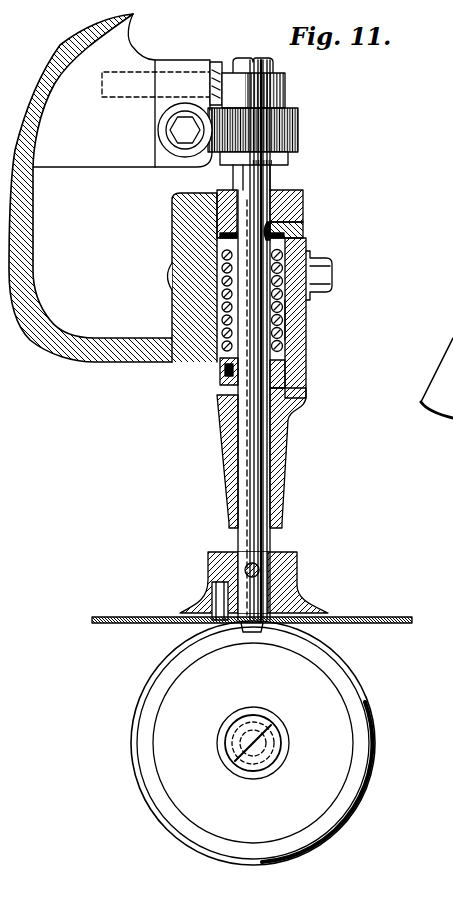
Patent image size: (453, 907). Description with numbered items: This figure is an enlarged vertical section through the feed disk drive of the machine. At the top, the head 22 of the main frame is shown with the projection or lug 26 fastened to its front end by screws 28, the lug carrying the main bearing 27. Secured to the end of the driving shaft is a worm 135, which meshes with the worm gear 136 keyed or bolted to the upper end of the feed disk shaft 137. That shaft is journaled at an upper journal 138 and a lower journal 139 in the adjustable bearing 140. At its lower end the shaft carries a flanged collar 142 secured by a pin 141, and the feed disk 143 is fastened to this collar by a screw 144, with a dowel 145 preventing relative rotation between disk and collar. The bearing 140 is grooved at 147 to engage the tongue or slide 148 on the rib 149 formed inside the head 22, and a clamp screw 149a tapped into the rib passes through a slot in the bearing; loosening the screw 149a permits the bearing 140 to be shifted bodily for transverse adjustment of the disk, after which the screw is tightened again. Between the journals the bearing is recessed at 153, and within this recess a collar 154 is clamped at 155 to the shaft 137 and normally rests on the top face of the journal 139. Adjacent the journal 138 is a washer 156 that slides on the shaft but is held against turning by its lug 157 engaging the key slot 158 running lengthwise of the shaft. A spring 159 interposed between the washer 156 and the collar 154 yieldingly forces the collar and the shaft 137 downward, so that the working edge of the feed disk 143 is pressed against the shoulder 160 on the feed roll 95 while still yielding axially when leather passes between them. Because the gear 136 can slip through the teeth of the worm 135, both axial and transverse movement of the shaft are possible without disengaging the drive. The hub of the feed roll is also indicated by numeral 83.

The head 22 is at (58, 37).
The projection or lug 26 is at (123, 52).
The main bearing 27 is at (181, 61).
The screws 28 is at (218, 66).
The worm 135 is at (173, 155).
The worm gear 136 is at (299, 125).
The feed disk shaft 137 is at (250, 440).
The journal 138 is at (306, 196).
The journal 139 is at (283, 478).
The adjustable bearing 140 is at (306, 365).
The pin 141 is at (248, 563).
The flanged collar 142 is at (294, 560).
The feed disk 143 is at (391, 616).
The screw 144 is at (258, 624).
The dowel 145 is at (212, 586).
The groove 147 is at (220, 304).
The tongue or slide 148 is at (225, 296).
The rib 149 is at (182, 238).
The clamp screw 149a is at (322, 268).
The recess 153 is at (300, 312).
The collar 154 is at (283, 382).
The clamp 155 is at (226, 372).
The washer 156 is at (306, 234).
The lug 157 is at (305, 223).
The key slot 158 is at (306, 215).
The spring 159 is at (293, 336).
The shoulder 160 is at (352, 666).
The feed roll 95 is at (275, 743).
The hub 83 is at (273, 746).